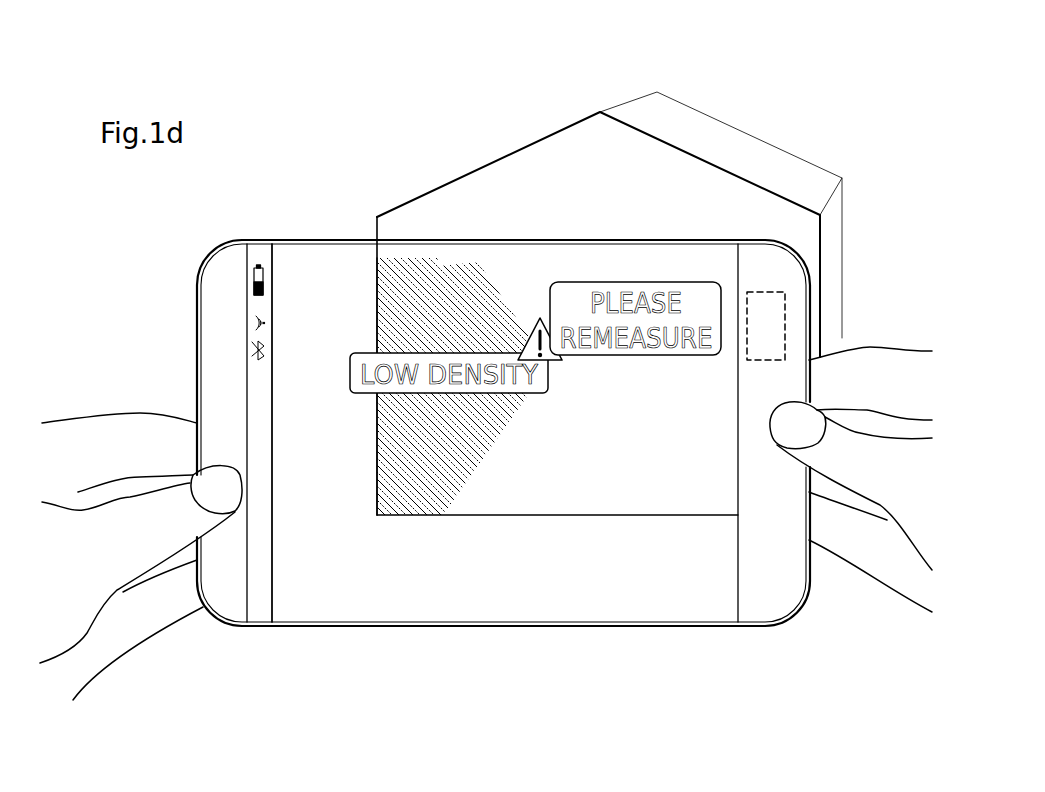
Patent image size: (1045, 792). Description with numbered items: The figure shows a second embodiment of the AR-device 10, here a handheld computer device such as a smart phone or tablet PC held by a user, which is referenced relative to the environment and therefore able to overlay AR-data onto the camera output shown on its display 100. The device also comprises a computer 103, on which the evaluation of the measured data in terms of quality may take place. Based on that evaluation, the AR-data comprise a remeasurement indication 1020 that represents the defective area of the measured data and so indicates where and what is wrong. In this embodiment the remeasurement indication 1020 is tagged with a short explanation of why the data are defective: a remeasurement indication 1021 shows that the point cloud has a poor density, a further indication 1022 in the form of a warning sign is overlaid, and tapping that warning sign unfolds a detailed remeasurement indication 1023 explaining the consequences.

The AR-device 10 is at (773, 625).
The display 100 is at (553, 613).
The computer 103 is at (773, 310).
The remeasurement indication 1020 is at (378, 295).
The remeasurement indication 1021 is at (332, 332).
The further indication 1022 is at (503, 303).
The detailed remeasurement indication 1023 is at (530, 250).